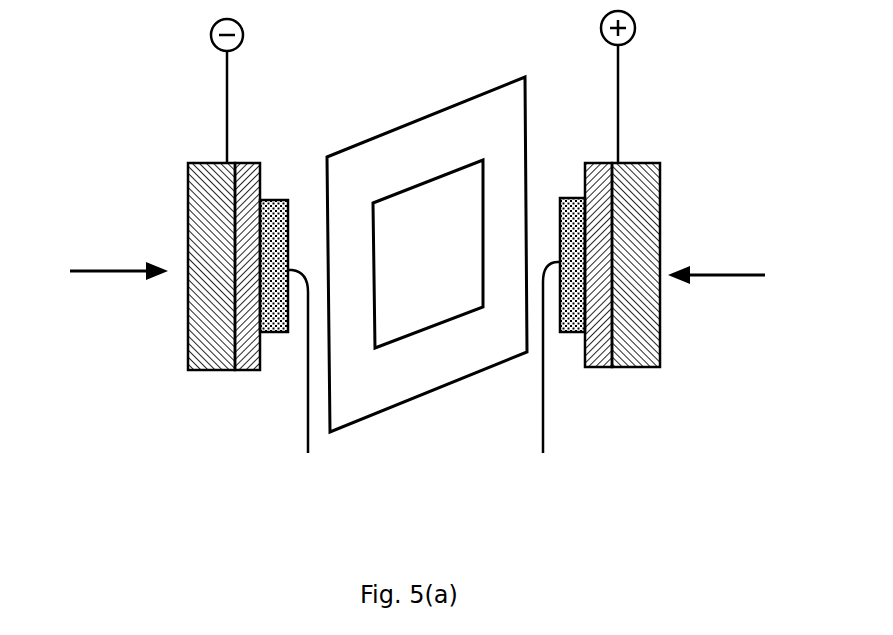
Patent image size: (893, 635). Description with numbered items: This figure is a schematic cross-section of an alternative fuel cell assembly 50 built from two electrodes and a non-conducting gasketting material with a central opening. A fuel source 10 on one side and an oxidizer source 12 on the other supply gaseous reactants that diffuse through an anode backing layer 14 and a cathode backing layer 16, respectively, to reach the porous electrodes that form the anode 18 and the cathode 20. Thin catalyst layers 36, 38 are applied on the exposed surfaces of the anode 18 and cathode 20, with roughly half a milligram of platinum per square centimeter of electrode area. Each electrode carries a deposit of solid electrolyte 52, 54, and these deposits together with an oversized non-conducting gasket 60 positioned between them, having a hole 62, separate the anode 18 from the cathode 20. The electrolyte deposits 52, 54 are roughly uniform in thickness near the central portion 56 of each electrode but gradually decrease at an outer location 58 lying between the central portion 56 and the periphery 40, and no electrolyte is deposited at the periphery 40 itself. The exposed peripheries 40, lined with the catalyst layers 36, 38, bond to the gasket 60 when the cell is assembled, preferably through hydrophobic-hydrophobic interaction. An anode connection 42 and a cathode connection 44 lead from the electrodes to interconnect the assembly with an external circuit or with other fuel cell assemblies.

The fuel source 10 is at (121, 266).
The oxidizer source 12 is at (717, 262).
The anode backing layer 14 is at (192, 328).
The cathode backing layer 16 is at (640, 325).
The anode 18 is at (258, 368).
The cathode 20 is at (600, 367).
The catalyst layer 36 is at (275, 338).
The catalyst layer 38 is at (585, 335).
The periphery 40 is at (266, 192).
The anode connection 42 is at (222, 80).
The cathode connection 44 is at (624, 78).
The fuel cell assembly 50 is at (92, 67).
The solid electrolyte deposit 52 is at (281, 200).
The solid electrolyte deposit 54 is at (568, 200).
The central portion 56 is at (426, 372).
The outer location 58 is at (274, 198).
The non-conducting gasket 60 is at (360, 395).
The hole 62 is at (420, 313).